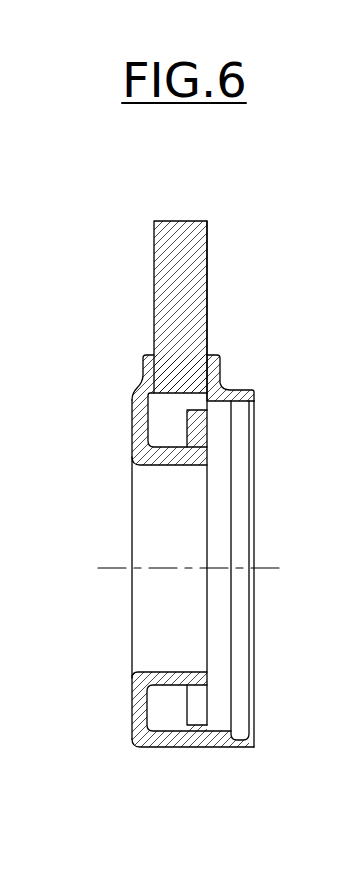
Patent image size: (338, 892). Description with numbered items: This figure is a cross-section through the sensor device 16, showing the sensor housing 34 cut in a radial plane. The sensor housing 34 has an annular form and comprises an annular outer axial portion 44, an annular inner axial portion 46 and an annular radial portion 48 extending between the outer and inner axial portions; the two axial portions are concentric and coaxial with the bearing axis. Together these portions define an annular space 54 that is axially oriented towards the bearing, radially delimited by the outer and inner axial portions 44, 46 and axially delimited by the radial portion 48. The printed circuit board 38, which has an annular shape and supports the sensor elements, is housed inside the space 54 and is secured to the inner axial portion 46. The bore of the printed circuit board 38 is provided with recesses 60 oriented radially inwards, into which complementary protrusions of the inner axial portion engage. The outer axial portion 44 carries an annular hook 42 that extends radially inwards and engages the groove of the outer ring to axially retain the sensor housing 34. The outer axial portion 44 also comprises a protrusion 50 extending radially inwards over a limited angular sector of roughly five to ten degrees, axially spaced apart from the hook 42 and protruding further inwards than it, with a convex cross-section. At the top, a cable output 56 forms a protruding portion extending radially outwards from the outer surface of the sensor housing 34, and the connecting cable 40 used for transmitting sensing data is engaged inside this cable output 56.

The sensor device 16 is at (272, 274).
The connecting cable 40 is at (167, 274).
The sensor housing 34 is at (131, 417).
The cable output 56 is at (218, 360).
The protrusion 50 is at (248, 404).
The printed circuit board 38 is at (198, 429).
The recess 60 is at (199, 452).
The annular radial portion 48 is at (137, 708).
The annular inner axial portion 46 is at (178, 678).
The annular space 54 is at (167, 708).
The annular outer axial portion 44 is at (185, 738).
The annular hook 42 is at (256, 738).